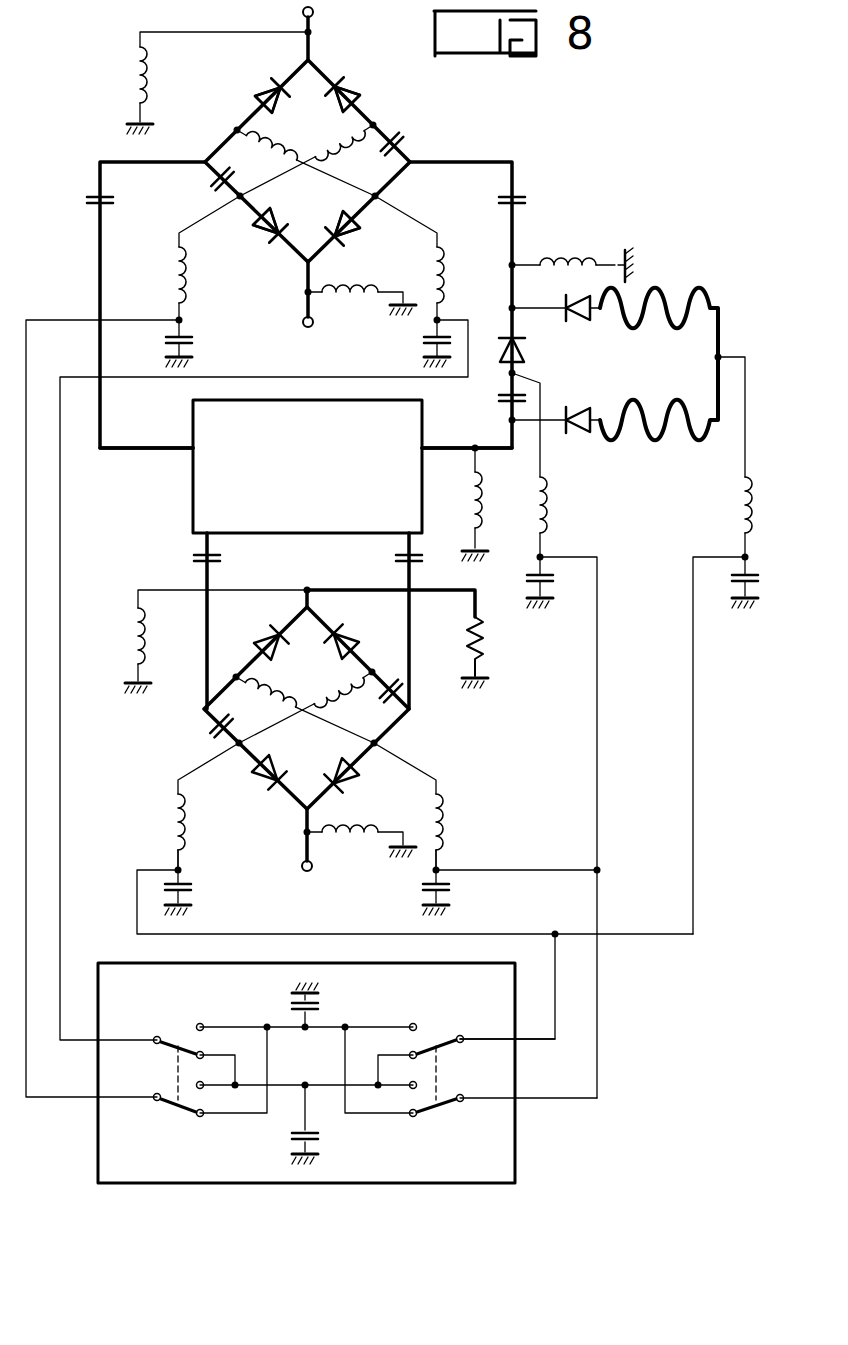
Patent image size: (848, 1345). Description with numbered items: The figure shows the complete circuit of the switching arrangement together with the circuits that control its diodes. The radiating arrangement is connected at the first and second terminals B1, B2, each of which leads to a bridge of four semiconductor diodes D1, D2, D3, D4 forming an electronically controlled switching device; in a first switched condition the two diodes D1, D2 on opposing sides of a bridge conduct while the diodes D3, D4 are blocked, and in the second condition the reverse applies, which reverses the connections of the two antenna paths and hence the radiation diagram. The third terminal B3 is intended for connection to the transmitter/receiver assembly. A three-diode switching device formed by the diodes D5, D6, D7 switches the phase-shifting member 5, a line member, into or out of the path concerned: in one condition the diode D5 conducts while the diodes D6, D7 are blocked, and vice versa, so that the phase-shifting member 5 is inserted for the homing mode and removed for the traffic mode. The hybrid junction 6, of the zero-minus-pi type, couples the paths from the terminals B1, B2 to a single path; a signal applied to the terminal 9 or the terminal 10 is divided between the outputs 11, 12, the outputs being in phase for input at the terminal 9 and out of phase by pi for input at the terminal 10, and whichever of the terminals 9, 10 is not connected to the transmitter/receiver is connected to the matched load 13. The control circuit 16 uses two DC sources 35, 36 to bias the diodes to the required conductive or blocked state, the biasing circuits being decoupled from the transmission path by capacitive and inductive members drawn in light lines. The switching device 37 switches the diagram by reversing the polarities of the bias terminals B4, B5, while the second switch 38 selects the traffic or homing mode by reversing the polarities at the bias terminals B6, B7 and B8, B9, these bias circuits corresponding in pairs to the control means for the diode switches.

The first terminal B1 is at (315, 14).
The second terminal B2 is at (304, 314).
The third terminal B3 is at (302, 866).
The bias terminal B4 is at (178, 312).
The bias terminal B5 is at (444, 317).
The bias terminal B6 is at (174, 866).
The bias terminal B7 is at (448, 872).
The bias terminal B8 is at (544, 554).
The bias terminal B9 is at (742, 556).
The diode D1 is at (266, 88).
The diode D2 is at (352, 234).
The diode D3 is at (360, 88).
The diode D4 is at (264, 238).
The diode D5 is at (508, 356).
The diode D6 is at (578, 320).
The diode D7 is at (580, 410).
The phase-shifting member 5 is at (678, 388).
The hybrid junction 6 is at (194, 406).
The hybrid junction terminal 9 is at (200, 540).
The hybrid junction terminal 10 is at (410, 534).
The hybrid junction output 11 is at (191, 454).
The hybrid junction output 12 is at (426, 454).
The matched load 13 is at (484, 640).
The circuit for operating the diode switches 16 is at (128, 962).
The DC source 35 is at (292, 1010).
The DC source 36 is at (296, 1132).
The switching device 37 is at (176, 1068).
The second switch 38 is at (440, 1068).